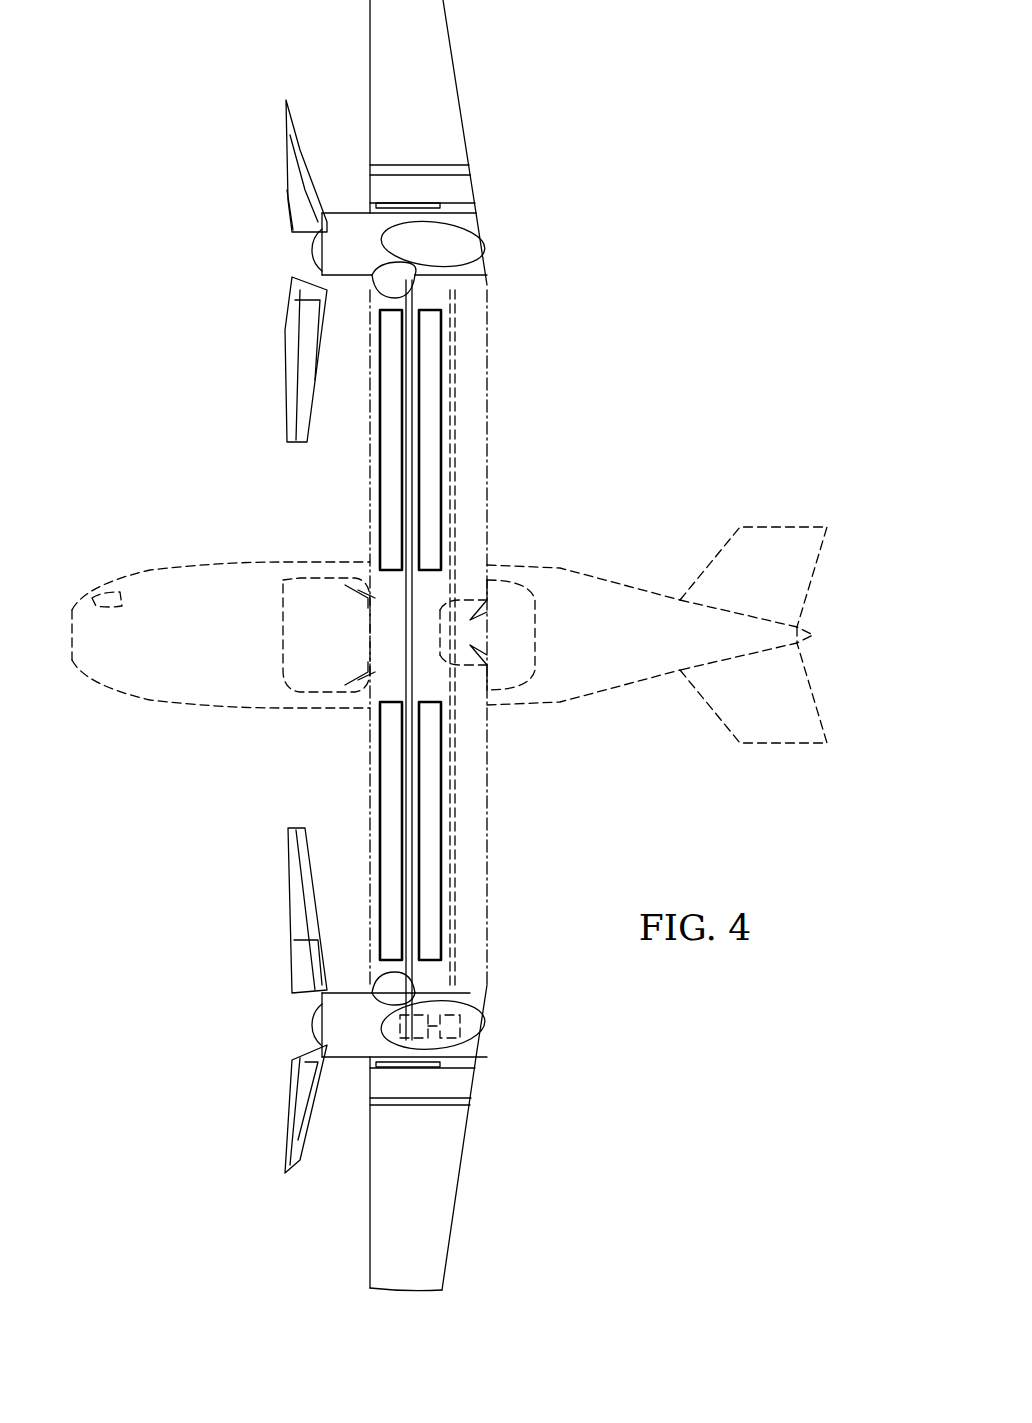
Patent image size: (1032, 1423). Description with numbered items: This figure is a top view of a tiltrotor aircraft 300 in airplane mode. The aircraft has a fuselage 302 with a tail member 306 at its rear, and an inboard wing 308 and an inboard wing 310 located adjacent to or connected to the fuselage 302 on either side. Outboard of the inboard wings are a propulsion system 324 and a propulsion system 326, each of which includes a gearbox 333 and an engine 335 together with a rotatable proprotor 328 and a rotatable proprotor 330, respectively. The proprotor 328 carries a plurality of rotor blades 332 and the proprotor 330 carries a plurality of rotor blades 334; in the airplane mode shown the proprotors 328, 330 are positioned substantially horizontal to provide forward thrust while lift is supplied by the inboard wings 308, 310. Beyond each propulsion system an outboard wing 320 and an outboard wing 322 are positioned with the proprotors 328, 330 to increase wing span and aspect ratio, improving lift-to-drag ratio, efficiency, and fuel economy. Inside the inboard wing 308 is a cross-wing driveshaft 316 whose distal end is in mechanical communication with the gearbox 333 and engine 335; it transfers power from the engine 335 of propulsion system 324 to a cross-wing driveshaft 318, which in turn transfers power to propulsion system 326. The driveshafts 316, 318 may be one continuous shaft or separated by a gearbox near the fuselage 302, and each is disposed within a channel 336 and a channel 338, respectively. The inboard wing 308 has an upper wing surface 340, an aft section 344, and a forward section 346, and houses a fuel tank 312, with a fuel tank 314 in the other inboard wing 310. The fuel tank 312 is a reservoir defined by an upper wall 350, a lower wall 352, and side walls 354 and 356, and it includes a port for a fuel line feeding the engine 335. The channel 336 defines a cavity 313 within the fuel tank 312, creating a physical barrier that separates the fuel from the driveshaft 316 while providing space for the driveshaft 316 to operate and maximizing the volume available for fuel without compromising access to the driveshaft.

The tiltrotor aircraft 300 is at (578, 163).
The fuselage 302 is at (167, 705).
The tail member 306 is at (815, 706).
The inboard wing 308 is at (370, 744).
The inboard wing 310 is at (370, 484).
The fuel tank 312 is at (380, 777).
The cavity 313 is at (416, 835).
The fuel tank 314 is at (380, 458).
The cross-wing driveshaft 316 is at (400, 826).
The cross-wing driveshaft 318 is at (414, 378).
The outboard wing 320 is at (460, 1205).
The outboard wing 322 is at (370, 80).
The propulsion system 324 is at (266, 1050).
The propulsion system 326 is at (266, 256).
The rotatable proprotor 328 is at (280, 1022).
The rotatable proprotor 330 is at (280, 243).
The rotor blades 332 is at (290, 905).
The gearbox 333 is at (415, 1042).
The rotor blades 334 is at (288, 135).
The engine 335 is at (483, 1032).
The channel 336 is at (418, 806).
The channel 338 is at (412, 440).
The upper wing surface 340 is at (376, 922).
The aft section 344 is at (450, 765).
The forward section 346 is at (405, 850).
The upper wall 350 is at (428, 871).
The lower wall 352 is at (440, 895).
The side wall 354 is at (430, 966).
The side wall 356 is at (418, 703).